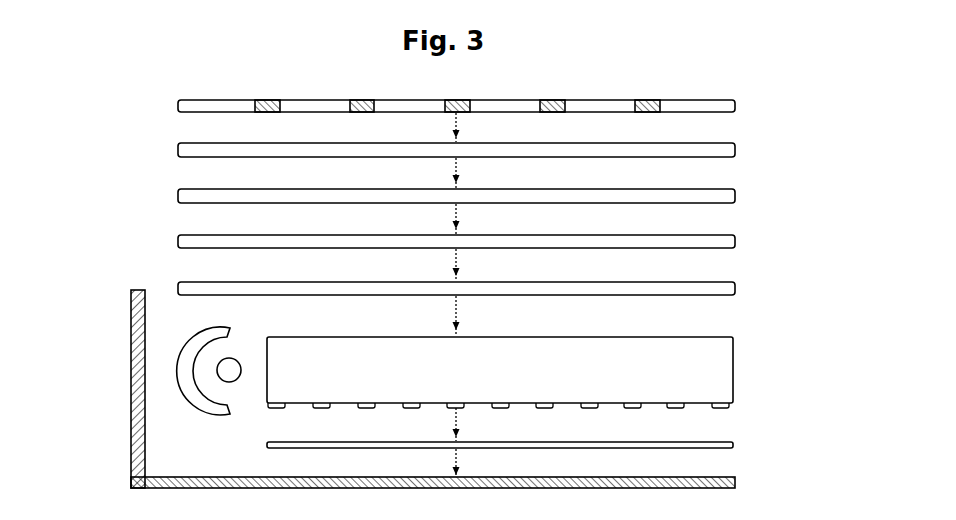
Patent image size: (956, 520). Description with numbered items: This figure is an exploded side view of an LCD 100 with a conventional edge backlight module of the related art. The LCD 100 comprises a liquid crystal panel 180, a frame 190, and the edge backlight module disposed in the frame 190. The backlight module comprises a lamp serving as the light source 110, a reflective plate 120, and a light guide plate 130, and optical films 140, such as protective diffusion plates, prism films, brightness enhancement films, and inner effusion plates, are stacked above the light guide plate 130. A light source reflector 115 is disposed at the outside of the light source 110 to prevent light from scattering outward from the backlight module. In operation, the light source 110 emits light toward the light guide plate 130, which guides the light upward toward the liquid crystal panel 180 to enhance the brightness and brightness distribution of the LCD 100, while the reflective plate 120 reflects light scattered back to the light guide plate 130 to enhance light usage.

The LCD 100 is at (98, 92).
The light source 110 is at (233, 368).
The light source reflector 115 is at (210, 338).
The reflective plate 120 is at (735, 445).
The light guide plate 130 is at (724, 370).
The optical films 140 is at (737, 150).
The liquid crystal panel 180 is at (737, 106).
The frame 190 is at (737, 482).